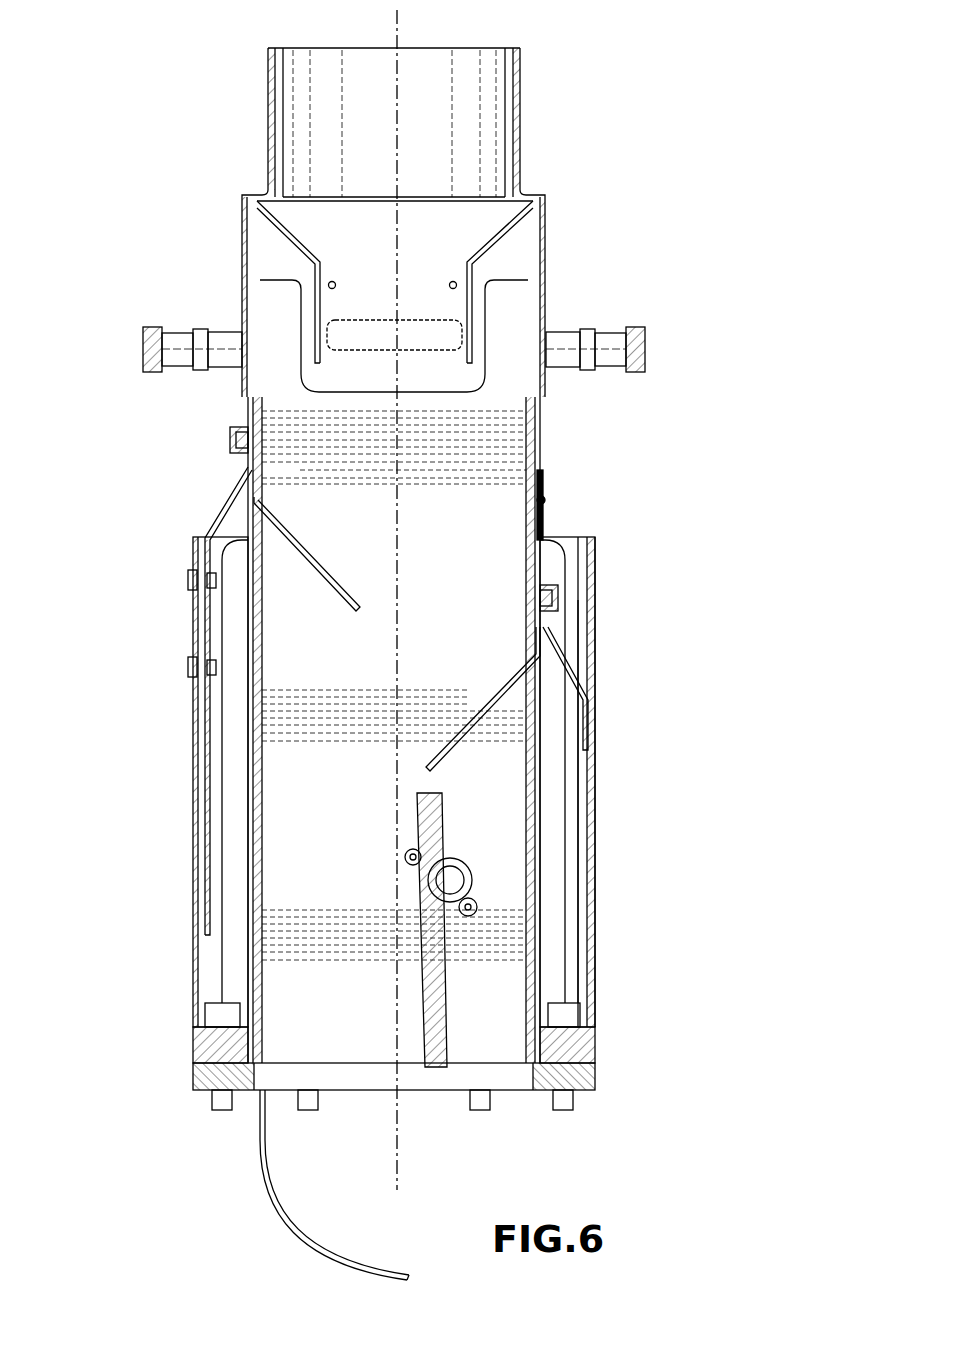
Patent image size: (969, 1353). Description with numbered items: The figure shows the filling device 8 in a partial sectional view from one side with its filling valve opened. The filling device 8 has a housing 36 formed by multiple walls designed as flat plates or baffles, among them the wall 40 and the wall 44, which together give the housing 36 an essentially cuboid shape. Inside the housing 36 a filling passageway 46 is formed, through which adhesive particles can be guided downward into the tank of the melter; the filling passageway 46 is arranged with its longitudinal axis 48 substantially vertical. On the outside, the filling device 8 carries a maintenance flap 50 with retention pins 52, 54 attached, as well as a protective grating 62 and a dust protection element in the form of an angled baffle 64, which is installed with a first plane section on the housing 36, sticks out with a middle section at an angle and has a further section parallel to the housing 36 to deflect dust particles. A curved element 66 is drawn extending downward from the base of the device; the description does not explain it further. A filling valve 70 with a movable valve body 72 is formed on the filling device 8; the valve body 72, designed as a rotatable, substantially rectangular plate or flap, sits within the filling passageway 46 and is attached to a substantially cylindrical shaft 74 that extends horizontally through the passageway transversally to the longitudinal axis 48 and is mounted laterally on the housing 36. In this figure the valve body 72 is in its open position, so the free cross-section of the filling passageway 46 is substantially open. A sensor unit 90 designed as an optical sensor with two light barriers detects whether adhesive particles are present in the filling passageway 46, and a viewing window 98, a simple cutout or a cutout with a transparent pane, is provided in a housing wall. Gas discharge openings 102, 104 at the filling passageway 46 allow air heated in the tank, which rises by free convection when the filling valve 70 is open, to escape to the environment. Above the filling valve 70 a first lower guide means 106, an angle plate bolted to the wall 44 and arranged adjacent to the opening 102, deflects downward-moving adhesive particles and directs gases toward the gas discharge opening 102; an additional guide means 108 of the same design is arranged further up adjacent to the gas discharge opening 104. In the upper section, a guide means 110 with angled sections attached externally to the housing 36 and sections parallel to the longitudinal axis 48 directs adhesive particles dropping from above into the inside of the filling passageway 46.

The filling device 8 is at (182, 1165).
The housing 36 is at (548, 490).
The wall 40 is at (540, 833).
The wall 44 is at (256, 833).
The filling passageway 46 is at (474, 552).
The longitudinal axis 48 is at (398, 32).
The maintenance flap 50 is at (242, 236).
The retention pin 52 is at (645, 348).
The retention pin 54 is at (145, 352).
The protective grating 62 is at (600, 656).
The baffle 64 is at (590, 740).
The cable 66 is at (284, 1217).
The filling valve 70 is at (340, 895).
The movable valve body 72 is at (420, 1035).
The shaft 74 is at (455, 880).
The sensor unit 90 is at (455, 385).
The viewing window 98 is at (366, 350).
The gas discharge opening 102 is at (586, 692).
The gas discharge opening 104 is at (242, 526).
The first lower guide means 106 is at (486, 730).
The guide means 108 is at (330, 590).
The guide means 110 is at (515, 230).